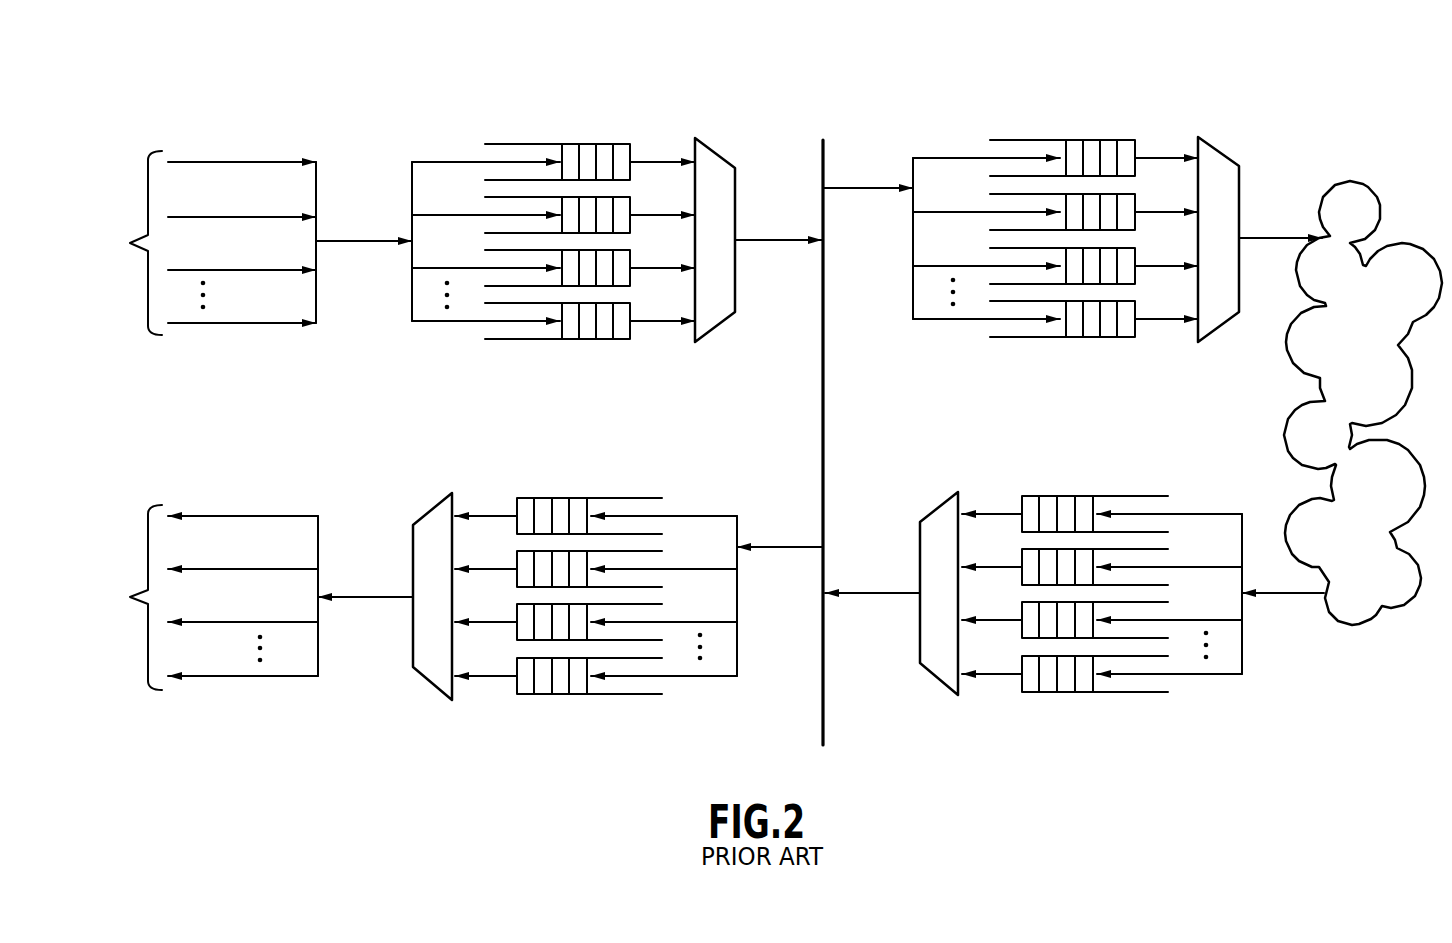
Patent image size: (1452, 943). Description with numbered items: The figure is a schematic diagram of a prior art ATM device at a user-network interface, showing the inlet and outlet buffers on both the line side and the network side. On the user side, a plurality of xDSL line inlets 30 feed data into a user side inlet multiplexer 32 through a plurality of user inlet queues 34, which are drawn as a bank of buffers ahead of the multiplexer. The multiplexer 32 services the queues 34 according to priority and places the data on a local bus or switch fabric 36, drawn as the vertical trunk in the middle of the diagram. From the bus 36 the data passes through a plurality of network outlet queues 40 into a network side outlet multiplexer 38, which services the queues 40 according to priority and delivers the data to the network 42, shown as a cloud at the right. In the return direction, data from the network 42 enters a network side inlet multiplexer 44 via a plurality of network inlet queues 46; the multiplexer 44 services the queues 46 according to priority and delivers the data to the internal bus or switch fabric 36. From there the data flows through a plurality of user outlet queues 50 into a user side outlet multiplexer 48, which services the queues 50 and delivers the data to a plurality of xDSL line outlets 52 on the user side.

The xDSL line inlets 30 is at (253, 243).
The user side inlet multiplexer 32 is at (713, 150).
The user inlet queues 34 is at (585, 110).
The local bus or switch fabric 36 is at (825, 413).
The network side outlet multiplexer 38 is at (1219, 152).
The network outlet queues 40 is at (1087, 108).
The network 42 is at (1415, 179).
The network side inlet multiplexer 44 is at (940, 503).
The network inlet queues 46 is at (1088, 462).
The user side outlet multiplexer 48 is at (433, 507).
The user outlet queues 50 is at (586, 463).
The xDSL line outlets 52 is at (207, 597).